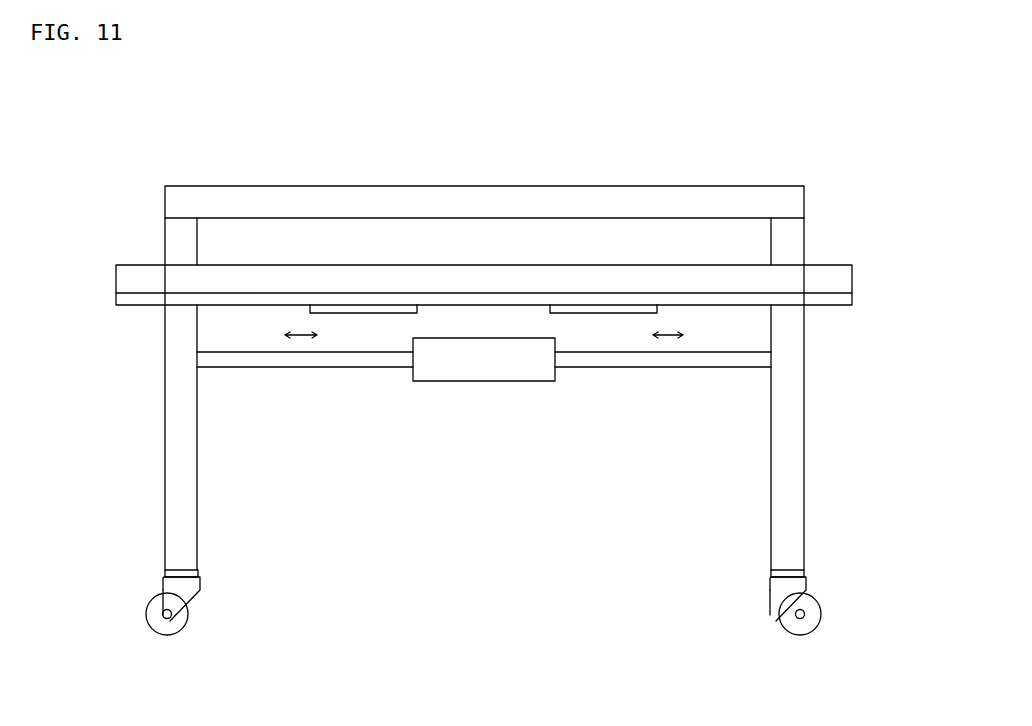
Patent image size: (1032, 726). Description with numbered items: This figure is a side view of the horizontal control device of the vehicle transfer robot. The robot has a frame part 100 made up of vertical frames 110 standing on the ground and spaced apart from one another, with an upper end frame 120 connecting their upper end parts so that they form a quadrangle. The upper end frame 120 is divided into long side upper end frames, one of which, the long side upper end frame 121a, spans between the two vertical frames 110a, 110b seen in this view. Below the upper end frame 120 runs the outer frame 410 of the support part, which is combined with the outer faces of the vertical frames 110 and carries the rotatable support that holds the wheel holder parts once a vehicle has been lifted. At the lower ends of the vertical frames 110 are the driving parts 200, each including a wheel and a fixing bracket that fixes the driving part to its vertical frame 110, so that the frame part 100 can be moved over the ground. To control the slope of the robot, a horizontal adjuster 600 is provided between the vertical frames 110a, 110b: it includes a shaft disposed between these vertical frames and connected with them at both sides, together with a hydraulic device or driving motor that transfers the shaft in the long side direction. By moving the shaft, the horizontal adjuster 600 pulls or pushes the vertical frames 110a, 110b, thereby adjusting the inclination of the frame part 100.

The frame part 100 is at (155, 197).
The vertical frame 110 is at (164, 437).
The vertical frame 110a is at (181, 397).
The vertical frame 110b is at (804, 432).
The upper end frame 120 is at (504, 186).
The long side upper end frame 121a is at (484, 202).
The outer frame 410 is at (853, 283).
The horizontal adjuster 600 is at (480, 381).
The driving part 200 is at (818, 578).
The element shaft is at (306, 360).